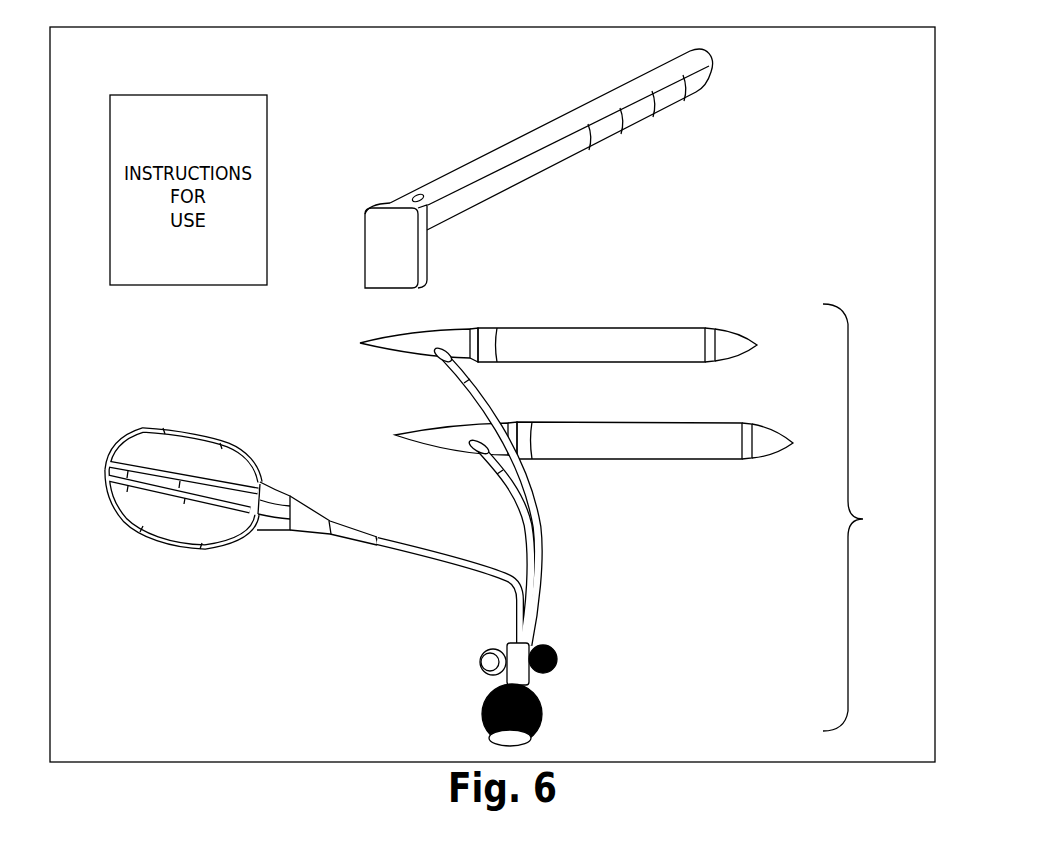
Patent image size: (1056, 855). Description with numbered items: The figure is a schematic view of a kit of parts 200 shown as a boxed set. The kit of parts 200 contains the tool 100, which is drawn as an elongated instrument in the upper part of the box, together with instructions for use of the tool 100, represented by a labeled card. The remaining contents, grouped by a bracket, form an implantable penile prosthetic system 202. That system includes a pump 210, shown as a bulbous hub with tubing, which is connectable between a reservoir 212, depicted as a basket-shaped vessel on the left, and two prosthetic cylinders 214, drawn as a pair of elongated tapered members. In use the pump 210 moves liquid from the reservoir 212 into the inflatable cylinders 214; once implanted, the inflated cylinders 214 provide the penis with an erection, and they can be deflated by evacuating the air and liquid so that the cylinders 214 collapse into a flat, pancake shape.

The tool 100 is at (735, 92).
The kit of parts 200 is at (935, 340).
The implantable penile prosthetic system 202 is at (863, 519).
The pump 210 is at (545, 712).
The reservoir 212 is at (172, 523).
The prosthetic cylinders 214 is at (586, 334).